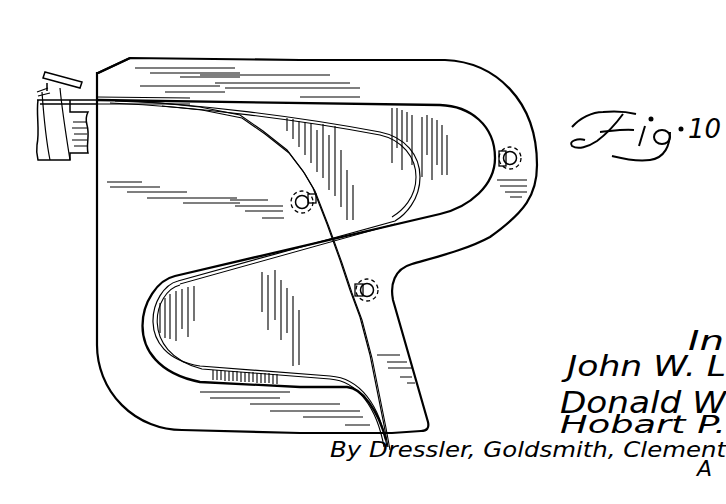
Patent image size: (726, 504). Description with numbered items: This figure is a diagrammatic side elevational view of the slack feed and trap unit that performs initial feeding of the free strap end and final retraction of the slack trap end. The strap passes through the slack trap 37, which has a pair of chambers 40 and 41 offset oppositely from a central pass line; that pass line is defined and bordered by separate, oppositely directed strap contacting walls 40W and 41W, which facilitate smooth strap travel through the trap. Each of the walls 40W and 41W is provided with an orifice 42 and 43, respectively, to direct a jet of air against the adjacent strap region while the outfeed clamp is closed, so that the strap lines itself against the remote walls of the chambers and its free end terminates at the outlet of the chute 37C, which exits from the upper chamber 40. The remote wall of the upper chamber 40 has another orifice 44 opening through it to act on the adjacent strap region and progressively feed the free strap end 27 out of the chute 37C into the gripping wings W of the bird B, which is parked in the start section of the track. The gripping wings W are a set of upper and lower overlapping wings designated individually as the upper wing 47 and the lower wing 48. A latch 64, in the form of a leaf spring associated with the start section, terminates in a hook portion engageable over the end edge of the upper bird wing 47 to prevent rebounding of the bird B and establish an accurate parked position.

The slack trap 37 is at (495, 218).
The outlet chute 37C is at (160, 105).
The upper chamber 40 is at (438, 124).
The strap contacting wall 40W is at (308, 171).
The lower chamber 41 is at (234, 302).
The strap contacting wall 41W is at (365, 340).
The orifice 42 is at (318, 205).
The orifice 43 is at (355, 288).
The orifice 44 is at (508, 150).
The latch 64 is at (67, 72).
The free strap end 27 is at (95, 82).
The gripping wings W is at (41, 84).
The bird B is at (67, 141).
The upper gripping wing 47 is at (42, 160).
The lower gripping wing 48 is at (67, 160).